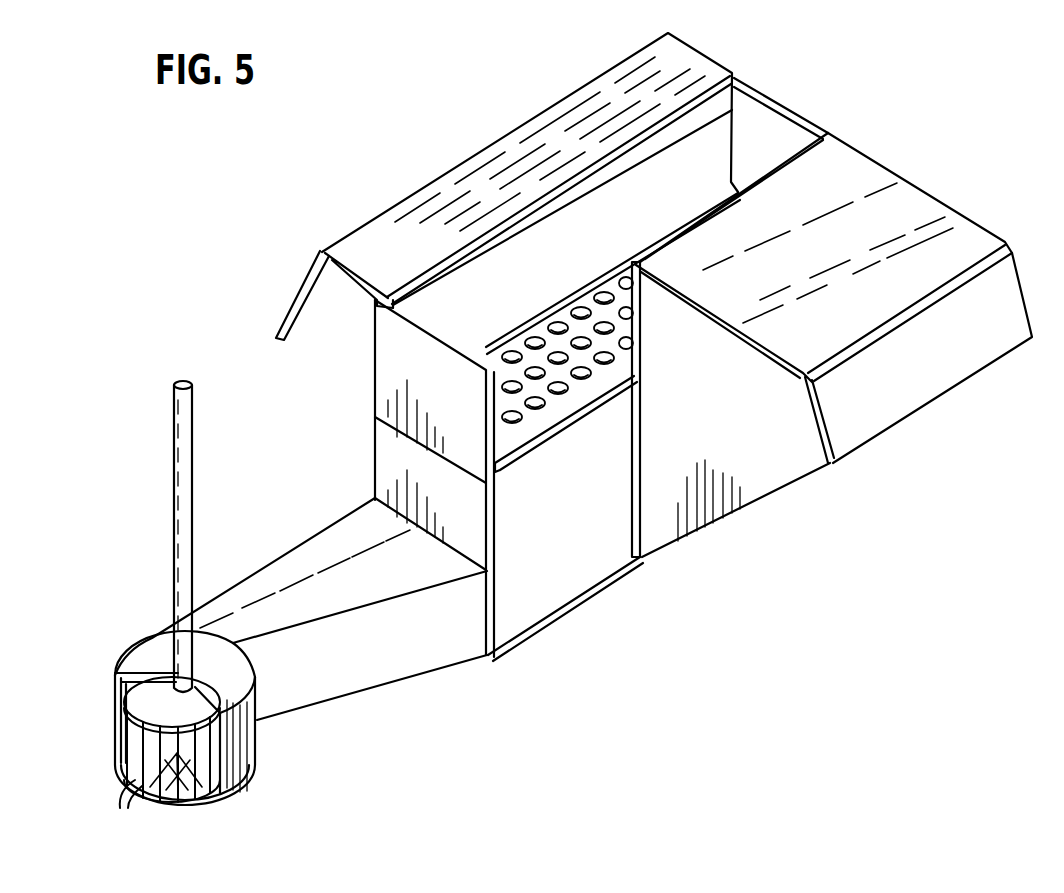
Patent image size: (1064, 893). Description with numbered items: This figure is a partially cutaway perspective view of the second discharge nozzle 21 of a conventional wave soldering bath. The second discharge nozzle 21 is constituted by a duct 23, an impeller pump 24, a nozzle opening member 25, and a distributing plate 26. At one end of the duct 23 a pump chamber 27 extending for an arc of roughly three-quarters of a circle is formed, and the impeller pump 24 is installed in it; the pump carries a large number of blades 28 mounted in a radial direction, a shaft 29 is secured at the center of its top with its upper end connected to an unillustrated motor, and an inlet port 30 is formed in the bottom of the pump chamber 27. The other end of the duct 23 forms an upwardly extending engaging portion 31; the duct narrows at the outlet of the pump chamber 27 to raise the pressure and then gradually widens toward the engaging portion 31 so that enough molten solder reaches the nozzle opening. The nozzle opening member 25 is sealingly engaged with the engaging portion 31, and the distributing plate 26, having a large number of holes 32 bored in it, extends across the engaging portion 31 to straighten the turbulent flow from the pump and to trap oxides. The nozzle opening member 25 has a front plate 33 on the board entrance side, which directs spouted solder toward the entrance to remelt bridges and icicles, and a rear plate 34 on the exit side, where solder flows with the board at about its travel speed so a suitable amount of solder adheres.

The second discharge nozzle 21 is at (680, 540).
The duct 23 is at (335, 543).
The impeller pump 24 is at (162, 697).
The nozzle opening member 25 is at (380, 355).
The distributing plate 26 is at (598, 398).
The pump chamber 27 is at (245, 750).
The blades 28 is at (140, 790).
The shaft 29 is at (178, 430).
The inlet port 30 is at (194, 792).
The engaging portion 31 is at (383, 450).
The holes 32 is at (559, 326).
The front plate 33 is at (700, 60).
The rear plate 34 is at (883, 173).